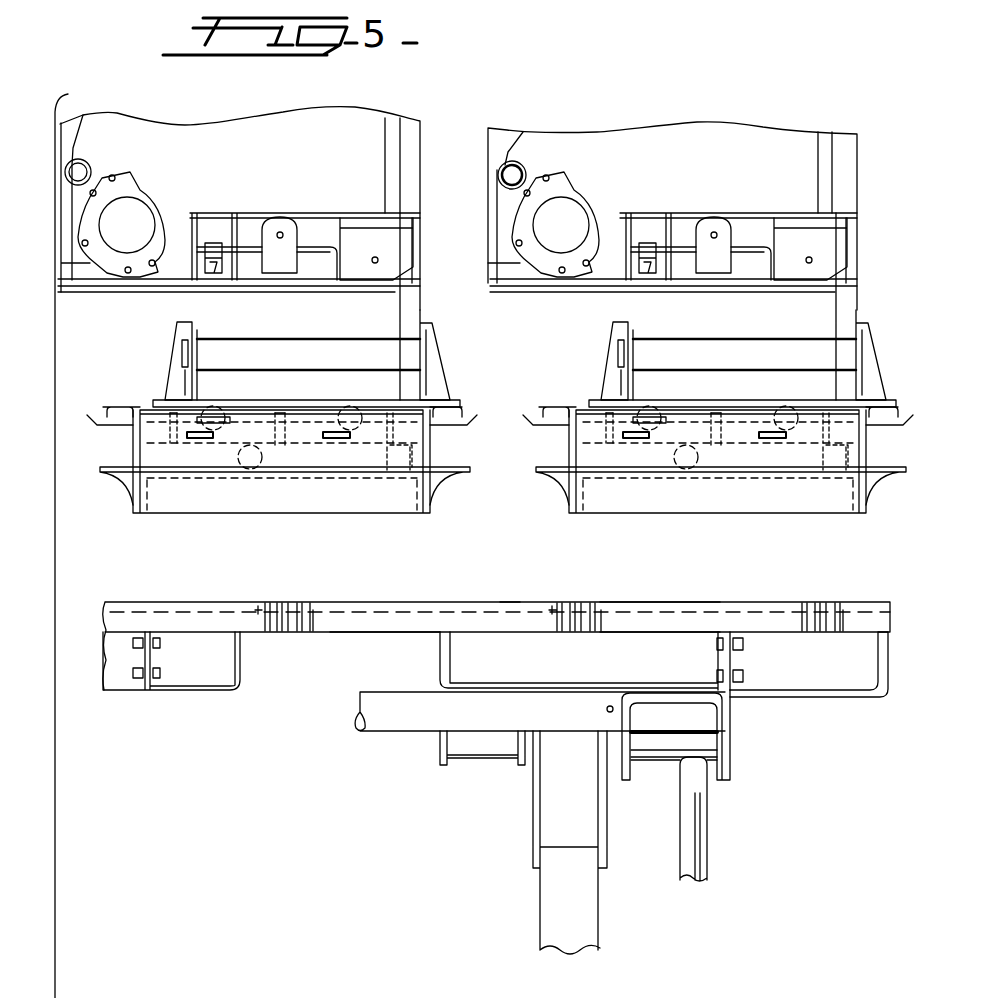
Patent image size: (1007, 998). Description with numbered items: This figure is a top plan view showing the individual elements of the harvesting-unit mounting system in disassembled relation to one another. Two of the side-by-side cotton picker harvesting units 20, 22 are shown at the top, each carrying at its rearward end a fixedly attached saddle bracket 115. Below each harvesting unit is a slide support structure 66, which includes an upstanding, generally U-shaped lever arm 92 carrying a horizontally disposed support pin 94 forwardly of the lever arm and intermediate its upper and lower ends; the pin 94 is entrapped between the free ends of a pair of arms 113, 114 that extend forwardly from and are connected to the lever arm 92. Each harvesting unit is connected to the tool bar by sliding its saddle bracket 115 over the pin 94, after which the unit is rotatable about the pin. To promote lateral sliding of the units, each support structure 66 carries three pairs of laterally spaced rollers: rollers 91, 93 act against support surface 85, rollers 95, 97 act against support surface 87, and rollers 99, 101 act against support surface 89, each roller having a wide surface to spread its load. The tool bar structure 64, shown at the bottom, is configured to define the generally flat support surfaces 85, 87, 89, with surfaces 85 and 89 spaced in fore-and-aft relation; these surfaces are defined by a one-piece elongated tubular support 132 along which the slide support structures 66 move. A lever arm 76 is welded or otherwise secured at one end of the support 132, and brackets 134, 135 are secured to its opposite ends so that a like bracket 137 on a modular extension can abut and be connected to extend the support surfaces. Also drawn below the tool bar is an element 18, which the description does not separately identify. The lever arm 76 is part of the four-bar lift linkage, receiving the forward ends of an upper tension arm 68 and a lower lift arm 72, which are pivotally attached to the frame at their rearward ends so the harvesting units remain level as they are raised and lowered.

The cotton picker harvesting unit 20 is at (238, 138).
The cotton picker harvesting unit 22 is at (659, 140).
The saddle bracket 115 is at (353, 216).
The arm 113 is at (175, 385).
The arm 114 is at (435, 390).
The support pin 94 is at (303, 369).
The roller 91 is at (208, 408).
The roller 93 is at (340, 410).
The slide support structure 66 is at (128, 443).
The lever arm 92 is at (448, 450).
The roller 95 is at (200, 440).
The roller 97 is at (337, 440).
The roller 99 is at (238, 477).
The roller 101 is at (383, 477).
The tool bar structure 64 is at (330, 603).
The support surface 85 is at (509, 601).
The tubular support 132 is at (652, 622).
The support surface 89 is at (299, 633).
The support surface 87 is at (367, 618).
The bracket 134 is at (450, 662).
The bracket 135 is at (205, 693).
The bracket 137 is at (794, 698).
The cross member 18 is at (385, 712).
The lever arm 76 is at (731, 770).
The upper tension arm 68 is at (688, 870).
The lift arm 72 is at (553, 905).